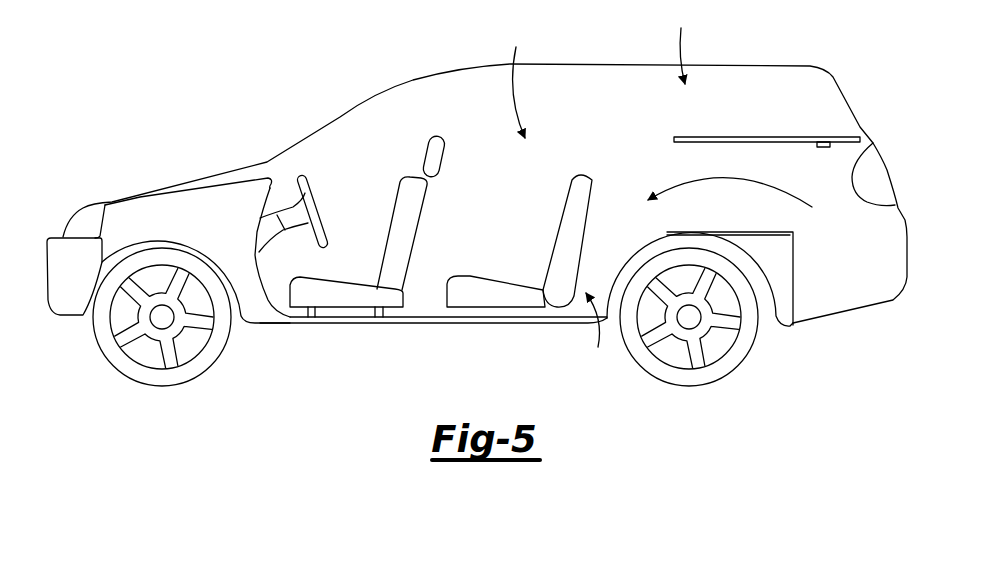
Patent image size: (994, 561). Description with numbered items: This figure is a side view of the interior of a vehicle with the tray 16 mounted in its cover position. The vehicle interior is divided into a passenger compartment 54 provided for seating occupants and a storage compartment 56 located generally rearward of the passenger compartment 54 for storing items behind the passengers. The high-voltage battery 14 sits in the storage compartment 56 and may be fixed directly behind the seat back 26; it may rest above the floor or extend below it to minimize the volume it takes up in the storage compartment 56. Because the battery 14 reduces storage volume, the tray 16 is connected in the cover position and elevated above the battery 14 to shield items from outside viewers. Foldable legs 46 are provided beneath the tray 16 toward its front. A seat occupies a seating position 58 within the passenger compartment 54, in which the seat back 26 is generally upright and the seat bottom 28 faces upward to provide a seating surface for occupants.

The high-voltage battery 14 is at (780, 282).
The tray 16 is at (745, 137).
The seat back 26 is at (575, 202).
The seat bottom 28 is at (492, 289).
The foldable legs 46 is at (824, 147).
The passenger compartment 54 is at (515, 79).
The storage compartment 56 is at (676, 44).
The seating position 58 is at (597, 334).